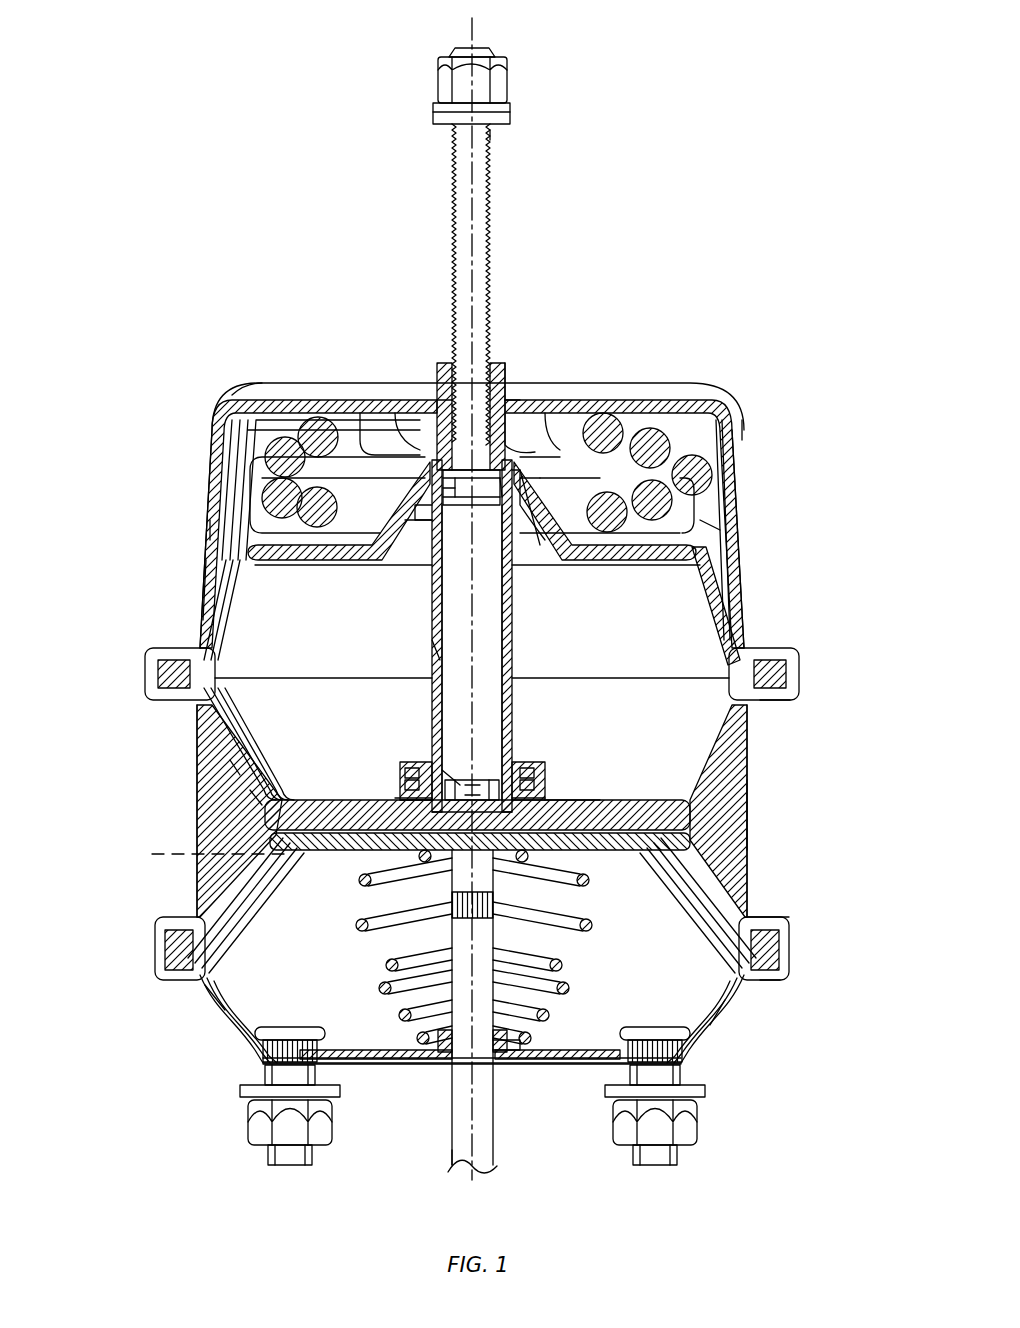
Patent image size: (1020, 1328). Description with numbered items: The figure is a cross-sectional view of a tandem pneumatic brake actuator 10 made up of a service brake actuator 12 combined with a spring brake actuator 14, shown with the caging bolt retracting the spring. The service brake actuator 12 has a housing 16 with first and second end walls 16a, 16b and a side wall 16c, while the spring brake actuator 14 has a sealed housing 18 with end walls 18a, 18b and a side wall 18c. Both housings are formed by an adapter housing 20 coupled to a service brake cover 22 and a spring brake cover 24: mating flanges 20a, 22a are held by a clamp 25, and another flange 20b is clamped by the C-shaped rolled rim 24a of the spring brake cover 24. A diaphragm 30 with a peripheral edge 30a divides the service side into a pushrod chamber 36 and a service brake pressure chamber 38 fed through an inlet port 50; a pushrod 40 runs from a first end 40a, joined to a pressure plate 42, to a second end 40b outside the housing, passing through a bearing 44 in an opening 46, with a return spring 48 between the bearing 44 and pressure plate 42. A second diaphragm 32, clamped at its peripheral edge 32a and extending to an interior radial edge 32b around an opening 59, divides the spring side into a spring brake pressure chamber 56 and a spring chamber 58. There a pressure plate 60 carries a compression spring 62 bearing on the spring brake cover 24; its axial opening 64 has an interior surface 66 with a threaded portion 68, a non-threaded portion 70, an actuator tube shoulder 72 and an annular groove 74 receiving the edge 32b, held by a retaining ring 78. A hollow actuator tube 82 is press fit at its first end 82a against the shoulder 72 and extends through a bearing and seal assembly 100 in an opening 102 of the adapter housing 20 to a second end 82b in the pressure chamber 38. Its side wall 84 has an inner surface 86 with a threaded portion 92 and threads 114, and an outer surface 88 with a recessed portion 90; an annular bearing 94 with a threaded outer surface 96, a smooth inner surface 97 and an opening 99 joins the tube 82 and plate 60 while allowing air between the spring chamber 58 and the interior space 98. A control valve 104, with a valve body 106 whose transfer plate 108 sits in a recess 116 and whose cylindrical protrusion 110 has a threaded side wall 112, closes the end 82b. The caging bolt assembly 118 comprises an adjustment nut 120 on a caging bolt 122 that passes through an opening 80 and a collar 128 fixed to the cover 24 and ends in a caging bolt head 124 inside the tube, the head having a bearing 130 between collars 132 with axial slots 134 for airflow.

The pneumatic brake actuator 10 is at (702, 285).
The service brake actuator 12 is at (200, 1052).
The spring brake actuator 14 is at (160, 522).
The housing 16 is at (712, 1052).
The first end wall 16a is at (372, 1066).
The second end wall 16b is at (262, 805).
The side wall 16c is at (205, 995).
The sealed housing 18 is at (752, 750).
The first end wall 18a is at (262, 390).
The second end wall 18b is at (245, 772).
The side wall 18c is at (204, 602).
The adapter housing 20 is at (750, 808).
The mating flange 20a is at (770, 915).
The flange 20b is at (793, 694).
The service brake cover 22 is at (722, 1010).
The mating flange 22a is at (775, 978).
The spring brake cover 24 is at (738, 540).
The C-shaped rolled rim 24a is at (795, 660).
The clamp 25 is at (788, 935).
The diaphragm 30 is at (240, 925).
The peripheral edge 30a is at (160, 930).
The diaphragm 32 is at (240, 620).
The peripheral edge 32a is at (170, 668).
The interior radial edge 32b is at (545, 555).
The pushrod chamber 36 is at (618, 933).
The service brake pressure chamber 38 is at (712, 845).
The pushrod 40 is at (494, 1128).
The first end 40a is at (452, 878).
The second end 40b is at (497, 1168).
The pressure plate 42 is at (638, 850).
The bearing 44 is at (445, 1058).
The opening 46 is at (508, 1064).
The return spring 48 is at (380, 988).
The inlet port 50 is at (203, 855).
The spring brake pressure chamber 56 is at (725, 630).
The spring chamber 58 is at (698, 524).
The opening 59 is at (412, 525).
The pressure plate 60 is at (672, 560).
The compression spring 62 is at (325, 404).
The axial opening 64 is at (522, 410).
The interior surface 66 is at (545, 440).
The threaded portion 68 is at (405, 405).
The non-threaded portion 70 is at (280, 470).
The actuator tube shoulder 72 is at (370, 405).
The annular groove 74 is at (580, 558).
The retaining ring 78 is at (410, 522).
The opening 80 is at (495, 365).
The hollow actuator tube 82 is at (512, 665).
The first end 82a is at (622, 412).
The second end 82b is at (420, 798).
The side wall 84 is at (512, 692).
The inner surface 86 is at (442, 660).
The outer surface 88 is at (432, 662).
The recessed portion 90 is at (425, 540).
The threaded portion 92 is at (570, 440).
The annular bearing or flange guide 94 is at (436, 400).
The threaded outer surface 96 is at (545, 410).
The smooth inner surface 97 is at (500, 360).
The interior space 98 is at (512, 630).
The opening 99 is at (555, 455).
The bearing and seal assembly 100 is at (532, 780).
The opening 102 is at (528, 768).
The control valve 104 is at (462, 770).
The valve body 106 is at (484, 780).
The transfer plate 108 is at (540, 796).
The cylindrical protrusion 110 is at (410, 768).
The threaded side wall 112 is at (408, 782).
The threads 114 is at (400, 796).
The recess 116 is at (560, 800).
The caging bolt assembly 118 is at (552, 142).
The adjustment nut 120 is at (498, 56).
The caging bolt 122 is at (484, 205).
The caging bolt head 124 is at (490, 505).
The collar 128 is at (512, 400).
The bearing 130 is at (448, 505).
The collars 132 is at (458, 500).
The axial slots 134 is at (500, 510).